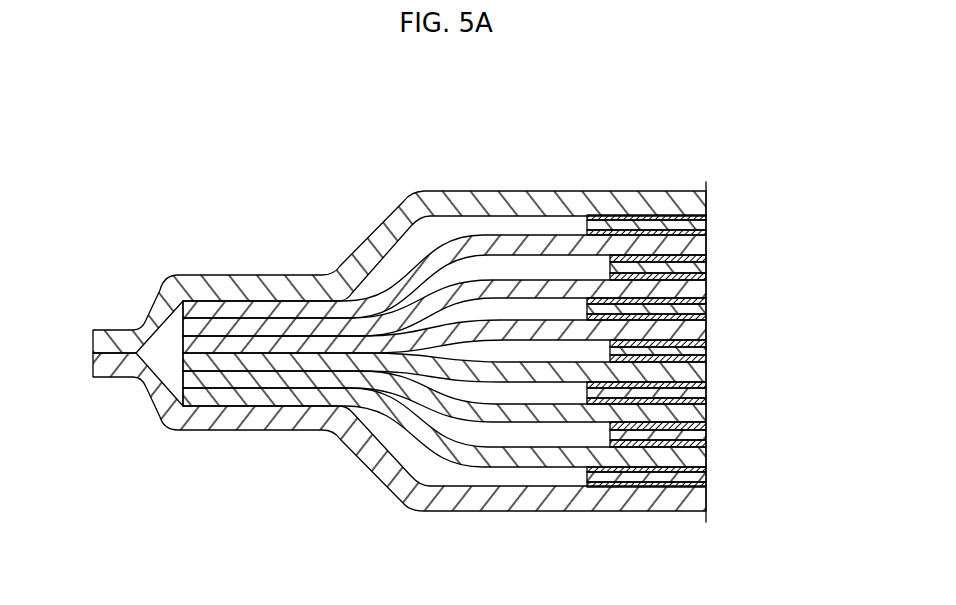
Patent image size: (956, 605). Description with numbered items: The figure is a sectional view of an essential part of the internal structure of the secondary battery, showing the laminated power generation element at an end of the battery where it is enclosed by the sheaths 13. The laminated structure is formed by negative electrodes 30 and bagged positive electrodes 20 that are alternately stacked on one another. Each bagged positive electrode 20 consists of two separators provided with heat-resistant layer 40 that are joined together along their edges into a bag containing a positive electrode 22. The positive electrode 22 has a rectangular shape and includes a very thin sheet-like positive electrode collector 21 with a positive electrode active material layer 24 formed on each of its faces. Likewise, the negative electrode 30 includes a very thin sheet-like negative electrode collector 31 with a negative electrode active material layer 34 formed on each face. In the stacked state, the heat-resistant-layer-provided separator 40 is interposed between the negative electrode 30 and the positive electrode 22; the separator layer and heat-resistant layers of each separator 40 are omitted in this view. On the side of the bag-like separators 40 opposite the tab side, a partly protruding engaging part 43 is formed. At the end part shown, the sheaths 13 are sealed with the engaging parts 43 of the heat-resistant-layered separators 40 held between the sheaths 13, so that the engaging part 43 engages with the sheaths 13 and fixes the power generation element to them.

The sheath 13 is at (487, 191).
The bagged positive electrode 20 is at (838, 210).
The positive electrode collector 21 is at (700, 269).
The positive electrode 22 is at (716, 342).
The positive electrode active material layer 24 is at (700, 258).
The negative electrode 30 is at (648, 285).
The negative electrode collector 31 is at (648, 225).
The negative electrode active material layer 34 is at (600, 215).
The separator provided with heat-resistant layer 40 is at (700, 245).
The engaging part 43 is at (183, 402).